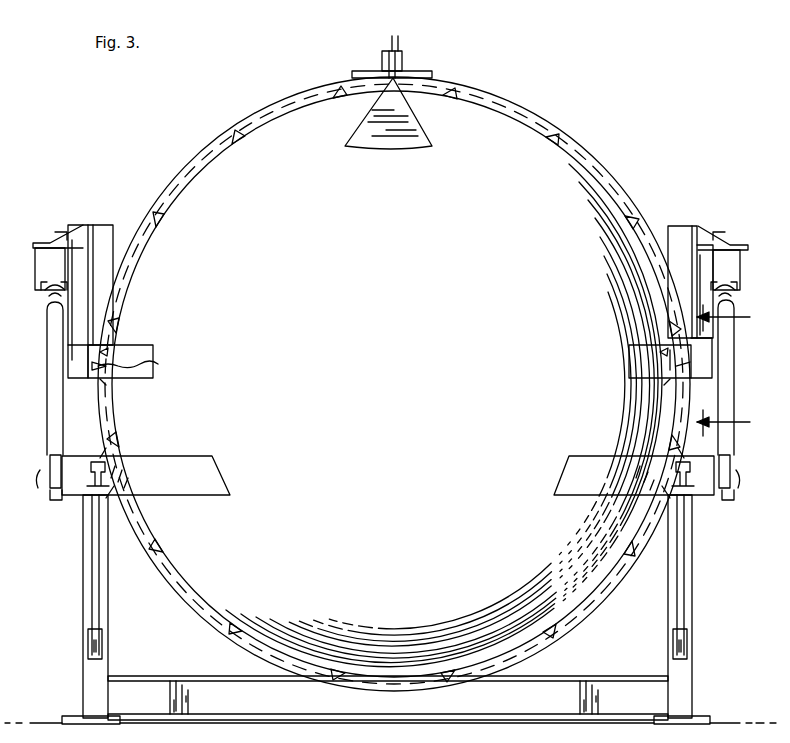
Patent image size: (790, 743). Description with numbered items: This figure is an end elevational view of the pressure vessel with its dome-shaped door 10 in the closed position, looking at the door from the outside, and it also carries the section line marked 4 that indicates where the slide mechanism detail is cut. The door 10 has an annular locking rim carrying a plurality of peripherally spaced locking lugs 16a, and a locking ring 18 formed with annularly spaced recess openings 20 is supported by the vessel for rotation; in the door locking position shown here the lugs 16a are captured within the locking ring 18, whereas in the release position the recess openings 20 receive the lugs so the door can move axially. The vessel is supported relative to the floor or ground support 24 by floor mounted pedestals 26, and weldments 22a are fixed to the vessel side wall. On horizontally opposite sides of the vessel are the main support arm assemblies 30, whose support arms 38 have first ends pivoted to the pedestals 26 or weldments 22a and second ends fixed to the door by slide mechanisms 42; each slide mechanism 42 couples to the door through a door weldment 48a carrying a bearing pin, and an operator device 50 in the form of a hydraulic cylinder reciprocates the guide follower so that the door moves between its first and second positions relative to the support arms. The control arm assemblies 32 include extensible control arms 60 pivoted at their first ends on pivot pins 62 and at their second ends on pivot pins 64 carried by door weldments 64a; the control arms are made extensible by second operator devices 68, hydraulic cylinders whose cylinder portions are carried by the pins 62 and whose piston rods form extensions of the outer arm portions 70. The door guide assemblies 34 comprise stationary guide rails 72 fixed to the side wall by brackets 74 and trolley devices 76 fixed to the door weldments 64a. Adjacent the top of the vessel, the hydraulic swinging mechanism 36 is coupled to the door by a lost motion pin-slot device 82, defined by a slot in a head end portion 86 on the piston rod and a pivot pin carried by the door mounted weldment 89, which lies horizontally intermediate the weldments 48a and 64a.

The door 10 is at (399, 233).
The locking ring 18 is at (545, 94).
The recess openings 20 is at (452, 84).
The locking lugs 16a is at (482, 86).
The weldments 22a is at (98, 224).
The ground support 24 is at (719, 716).
The pedestals 26 is at (88, 686).
The main support arm assemblies 30 is at (68, 326).
The control arm assemblies 32 is at (36, 392).
The door guide assemblies 34 is at (80, 518).
The mechanism for swinging the door 36 is at (410, 57).
The support arms 38 is at (80, 264).
The slide mechanisms 42 is at (105, 384).
The weldment 48a is at (132, 346).
The operator device 50 is at (158, 360).
The extensible control arms 60 is at (42, 440).
The pivot pins 62 is at (32, 286).
The pivot pins 64 is at (44, 488).
The door weldments 64a is at (206, 480).
The second operator devices 68 is at (38, 262).
The outer arm portions 70 is at (58, 440).
The guide rails 72 is at (112, 500).
The brackets 74 is at (100, 616).
The trolley devices 76 is at (100, 462).
The lost motion pin-slot device 82 is at (380, 58).
The head end portion 86 is at (398, 50).
The door mounted weldment 89 is at (376, 134).
The section line 4- 4 is at (731, 370).